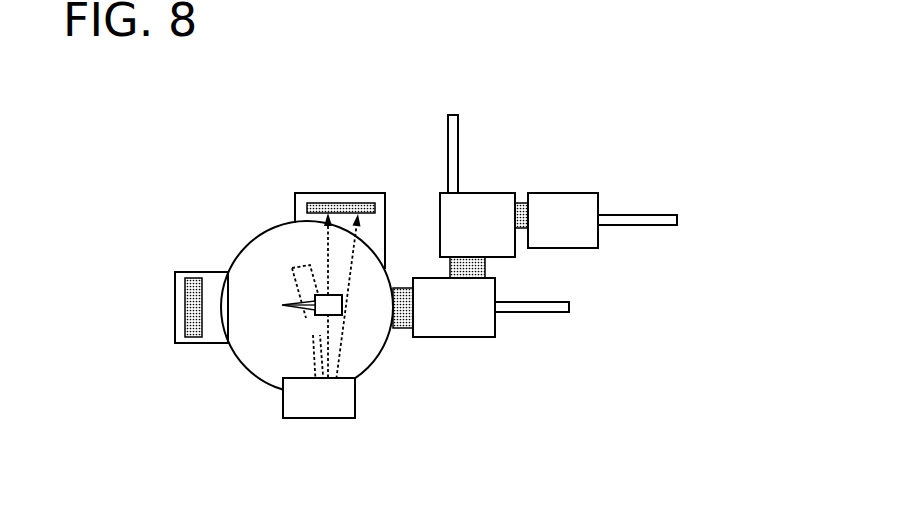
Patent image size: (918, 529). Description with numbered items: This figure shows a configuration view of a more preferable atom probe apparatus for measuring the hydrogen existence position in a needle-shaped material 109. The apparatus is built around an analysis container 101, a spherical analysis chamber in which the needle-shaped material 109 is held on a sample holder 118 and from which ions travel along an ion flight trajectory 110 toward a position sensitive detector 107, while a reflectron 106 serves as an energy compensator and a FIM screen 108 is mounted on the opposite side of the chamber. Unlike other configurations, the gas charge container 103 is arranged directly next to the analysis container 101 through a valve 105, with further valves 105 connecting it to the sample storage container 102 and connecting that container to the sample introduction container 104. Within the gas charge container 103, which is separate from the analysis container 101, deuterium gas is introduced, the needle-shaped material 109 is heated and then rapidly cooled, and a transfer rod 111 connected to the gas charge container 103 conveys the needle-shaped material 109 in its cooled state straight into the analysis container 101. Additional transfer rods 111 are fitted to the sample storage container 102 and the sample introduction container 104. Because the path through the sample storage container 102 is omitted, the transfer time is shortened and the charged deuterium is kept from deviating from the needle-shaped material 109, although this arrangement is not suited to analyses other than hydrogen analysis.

The analysis container 101 is at (242, 252).
The sample storage container 102 is at (476, 192).
The gas charge container 103 is at (470, 337).
The sample introduction container 104 is at (567, 192).
The valve 105 is at (522, 202).
The reflectron 106 is at (327, 418).
The position sensitive detector 107 is at (342, 202).
The FIM screen 108 is at (190, 343).
The needle-shaped material 109 is at (303, 310).
The ion flight trajectory 110 is at (325, 253).
The transfer rod 111 is at (448, 131).
The sample holder 118 is at (335, 315).